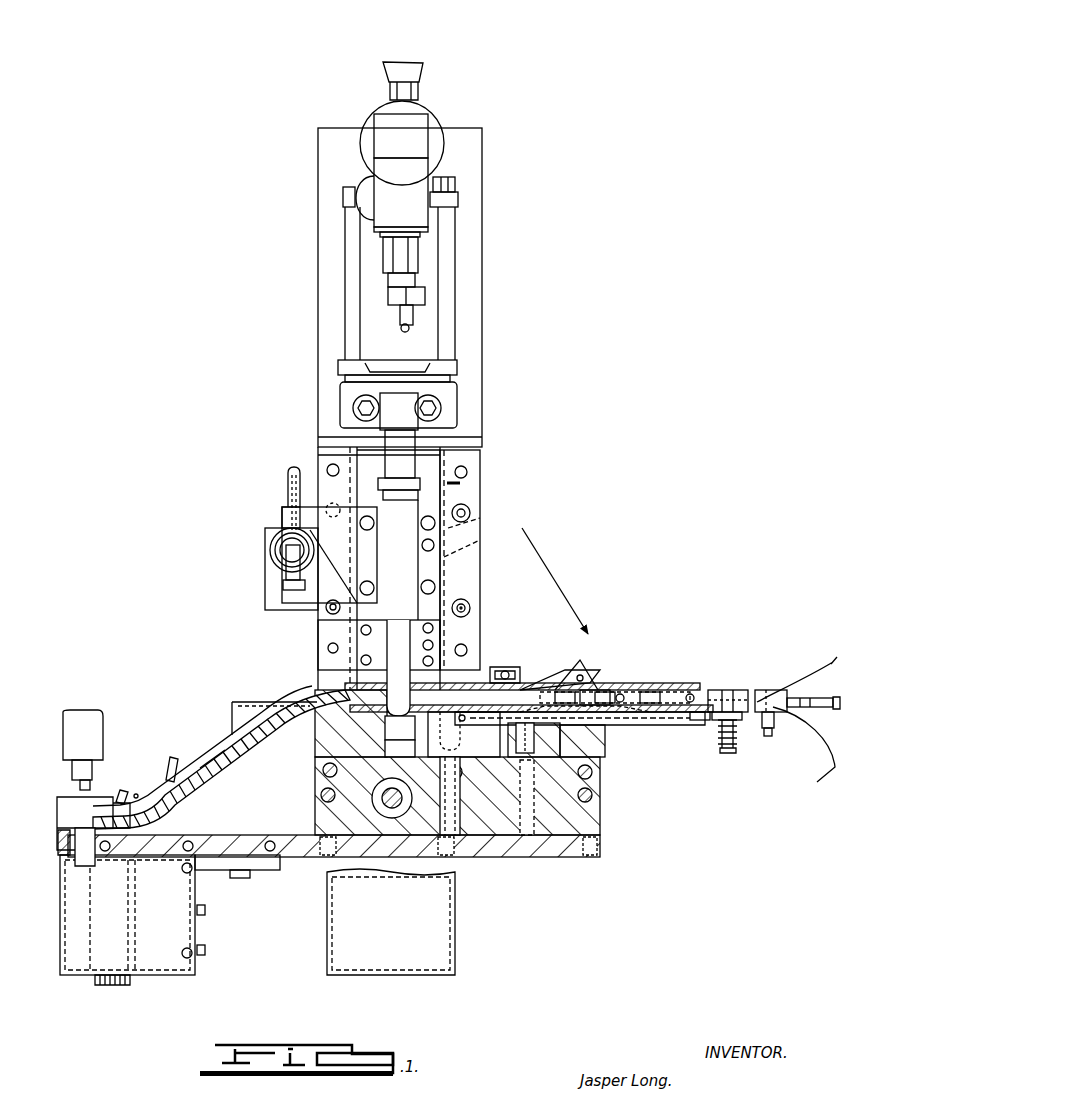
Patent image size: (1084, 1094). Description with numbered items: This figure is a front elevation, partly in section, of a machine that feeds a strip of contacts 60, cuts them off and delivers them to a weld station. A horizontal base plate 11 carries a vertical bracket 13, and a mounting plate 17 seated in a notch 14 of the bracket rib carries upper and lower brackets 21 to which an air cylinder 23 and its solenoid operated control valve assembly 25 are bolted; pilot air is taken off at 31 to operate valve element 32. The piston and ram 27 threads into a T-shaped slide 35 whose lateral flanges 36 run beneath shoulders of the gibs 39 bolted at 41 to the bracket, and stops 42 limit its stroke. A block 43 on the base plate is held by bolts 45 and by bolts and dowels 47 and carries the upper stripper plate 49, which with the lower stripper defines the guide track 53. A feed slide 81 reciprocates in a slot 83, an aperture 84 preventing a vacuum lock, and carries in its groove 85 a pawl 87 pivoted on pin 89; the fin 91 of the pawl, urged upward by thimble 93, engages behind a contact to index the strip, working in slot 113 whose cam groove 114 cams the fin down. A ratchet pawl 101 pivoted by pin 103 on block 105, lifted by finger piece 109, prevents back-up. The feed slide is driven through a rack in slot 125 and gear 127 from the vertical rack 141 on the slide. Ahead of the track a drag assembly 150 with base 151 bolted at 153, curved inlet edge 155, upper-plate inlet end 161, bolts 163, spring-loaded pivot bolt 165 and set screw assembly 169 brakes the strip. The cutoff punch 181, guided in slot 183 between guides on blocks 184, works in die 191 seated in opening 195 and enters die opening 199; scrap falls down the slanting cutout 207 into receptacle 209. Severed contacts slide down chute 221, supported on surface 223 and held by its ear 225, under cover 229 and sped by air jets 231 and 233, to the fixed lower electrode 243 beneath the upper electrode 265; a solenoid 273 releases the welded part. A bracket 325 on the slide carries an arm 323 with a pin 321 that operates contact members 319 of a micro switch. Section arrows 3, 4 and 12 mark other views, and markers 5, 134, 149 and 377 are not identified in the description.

The section line 3- 3 is at (472, 481).
The section line 4- 4 is at (437, 47).
The pivot 5 is at (640, 717).
The base plate 11 is at (300, 600).
The section line 12- 12 is at (530, 652).
The bracket 13 is at (500, 502).
The notch 14 is at (332, 706).
The mounting plate 17 is at (465, 262).
The brackets 21 is at (448, 406).
The air cylinder 23 is at (428, 330).
The solenoid operated control valve assembly 25 is at (434, 112).
The piston and ram 27 is at (406, 448).
The pilot air take-off 31 is at (396, 320).
The valve element 32 is at (400, 197).
The slide 35 is at (376, 545).
The lateral flanges 36 is at (466, 529).
The side rails or gibs 39 is at (484, 464).
The bolts 41 is at (466, 603).
The stops 42 is at (335, 444).
The block 43 is at (608, 784).
The bolts 45 is at (472, 862).
The bolts and dowels 47 is at (605, 790).
The upper stripper plate 49 is at (680, 683).
The guide track or opening 53 is at (668, 690).
The contacts 60 is at (622, 692).
The slide 81 is at (606, 752).
The slot 83 is at (504, 789).
The aperture 84 is at (464, 789).
The groove 85 is at (546, 740).
The pawl 87 is at (582, 726).
The pin 89 is at (657, 720).
The fin 91 is at (487, 737).
The thimble 93 is at (479, 749).
The ratchet pawl 101 is at (570, 668).
The pin 103 is at (585, 672).
The block 105 is at (600, 628).
The finger piece 109 is at (540, 668).
The slot 113 is at (464, 735).
The cam groove 114 is at (598, 686).
The slot 125 is at (318, 796).
The gear 127 is at (318, 822).
The bolt block 134 is at (326, 608).
The vertical rack 141 is at (452, 556).
The pin 149 is at (476, 723).
The drag assembly 150 is at (770, 690).
The lower mounting plate or base 151 is at (776, 724).
The bolts 153 is at (700, 722).
The curved inlet edge 155 is at (820, 780).
The curved inlet end 161 is at (814, 672).
The bolts 163 is at (786, 697).
The bolt 165 is at (726, 754).
The spring plunger type set screw assembly 169 is at (780, 735).
The cutoff punch 181 is at (402, 668).
The slot 183 is at (400, 620).
The blocks 184 is at (424, 620).
The die element 191 is at (351, 724).
The opening 195 is at (322, 770).
The opening 199 is at (402, 728).
The slanting cutout 207 is at (401, 749).
The receptacle 209 is at (450, 933).
The chute 221 is at (200, 756).
The surface 223 is at (304, 702).
The projecting ear 225 is at (320, 742).
The sheet metal cover 229 is at (126, 792).
The air jet 231 is at (170, 760).
The air jet 233 is at (232, 730).
The fixed lower electrode 243 is at (218, 810).
The upper electrode 265 is at (82, 718).
The solenoid 273 is at (150, 963).
The contact members 319 is at (286, 563).
The pin 321 is at (290, 481).
The arm 323 is at (283, 511).
The bracket 325 is at (325, 562).
The lead 377 is at (195, 900).